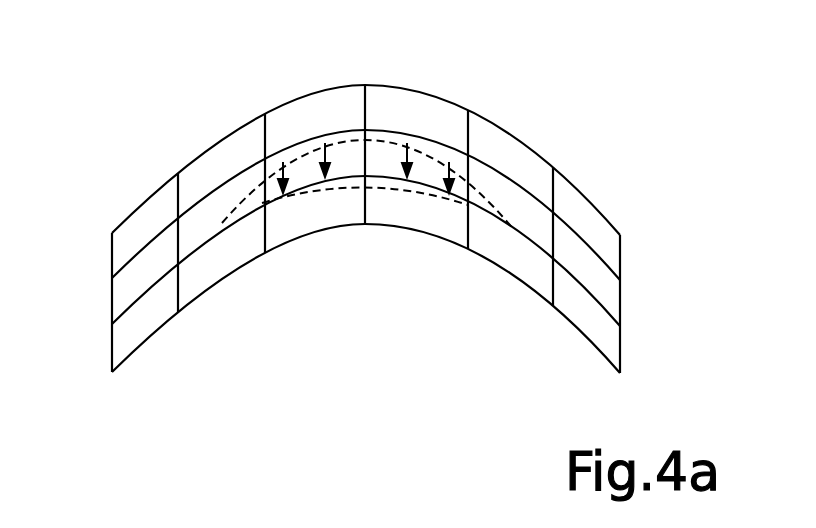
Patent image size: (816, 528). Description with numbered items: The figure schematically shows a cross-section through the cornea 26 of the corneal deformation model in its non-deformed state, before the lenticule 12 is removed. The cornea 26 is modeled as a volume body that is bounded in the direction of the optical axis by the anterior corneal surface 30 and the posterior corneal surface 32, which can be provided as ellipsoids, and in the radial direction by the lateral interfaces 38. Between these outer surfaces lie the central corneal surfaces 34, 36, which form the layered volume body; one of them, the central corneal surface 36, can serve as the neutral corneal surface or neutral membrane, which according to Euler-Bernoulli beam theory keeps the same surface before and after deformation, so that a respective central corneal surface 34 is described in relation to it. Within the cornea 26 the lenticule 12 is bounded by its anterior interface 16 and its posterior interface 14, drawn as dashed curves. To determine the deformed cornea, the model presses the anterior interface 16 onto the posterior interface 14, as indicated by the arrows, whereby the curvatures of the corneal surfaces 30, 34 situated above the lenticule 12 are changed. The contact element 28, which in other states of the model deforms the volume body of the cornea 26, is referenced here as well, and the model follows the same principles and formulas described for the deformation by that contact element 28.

The lenticule 12 is at (385, 157).
The posterior interface of the lenticule 14 is at (337, 188).
The anterior interface of the lenticule 16 is at (297, 157).
The cornea 26 is at (193, 113).
The contact element 28 is at (218, 230).
The anterior corneal surface 30 is at (452, 102).
The posterior corneal surface 32 is at (520, 284).
The central corneal surface 34 is at (516, 188).
The central corneal surface (neutral corneal surface) 36 is at (596, 302).
The lateral interfaces 38 is at (112, 293).